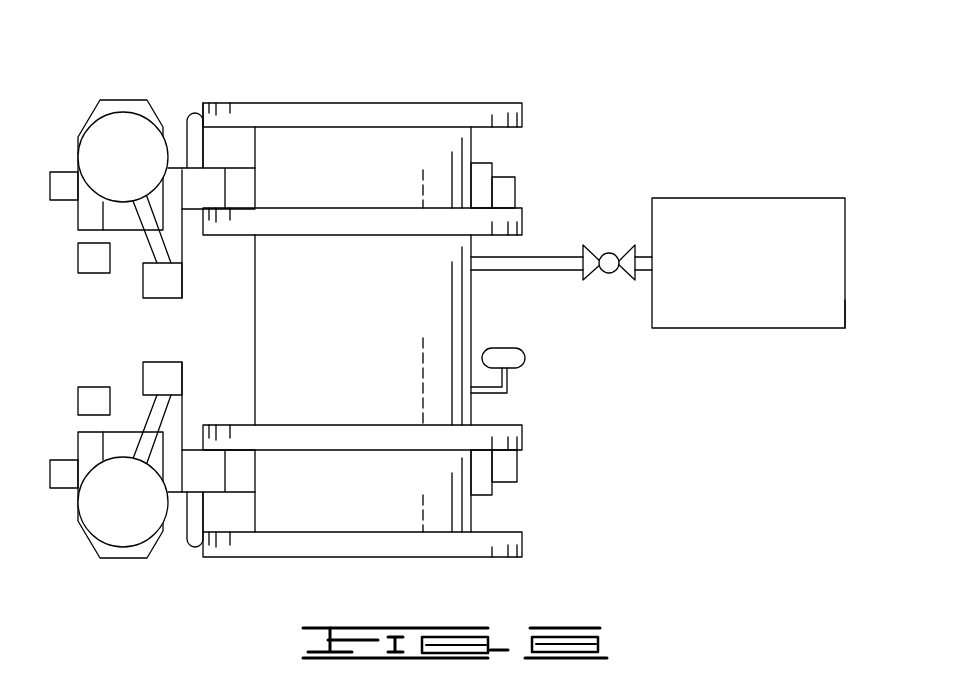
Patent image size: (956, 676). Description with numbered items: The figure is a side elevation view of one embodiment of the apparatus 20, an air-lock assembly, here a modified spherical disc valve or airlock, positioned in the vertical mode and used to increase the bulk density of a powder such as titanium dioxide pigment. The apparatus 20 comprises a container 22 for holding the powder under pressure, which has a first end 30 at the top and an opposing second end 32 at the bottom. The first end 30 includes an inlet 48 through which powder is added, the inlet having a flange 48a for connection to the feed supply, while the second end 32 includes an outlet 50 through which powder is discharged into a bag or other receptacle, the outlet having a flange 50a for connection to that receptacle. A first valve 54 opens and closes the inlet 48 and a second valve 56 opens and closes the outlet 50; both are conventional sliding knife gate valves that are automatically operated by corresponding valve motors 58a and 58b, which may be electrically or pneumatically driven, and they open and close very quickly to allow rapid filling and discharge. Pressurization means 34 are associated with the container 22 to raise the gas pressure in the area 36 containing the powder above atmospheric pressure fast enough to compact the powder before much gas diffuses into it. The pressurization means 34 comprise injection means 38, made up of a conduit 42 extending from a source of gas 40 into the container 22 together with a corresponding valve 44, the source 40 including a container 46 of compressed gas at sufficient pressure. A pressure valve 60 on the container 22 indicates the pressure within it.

The apparatus 20 is at (602, 77).
The container 22 is at (471, 325).
The first end 30 is at (455, 102).
The second end 32 is at (457, 557).
The pressurization means 34 is at (847, 308).
The area 36 is at (376, 341).
The injection means 38 is at (567, 257).
The source of gas 40 is at (768, 198).
The conduit 42 is at (540, 257).
The valve 44 is at (605, 272).
The container 46 is at (767, 276).
The inlet 48 is at (330, 152).
The flange 48a is at (237, 112).
The outlet 50 is at (320, 503).
The flange 50a is at (507, 540).
The first valve 54 is at (287, 237).
The second valve 56 is at (283, 423).
The valve motor 58a is at (105, 143).
The valve motor 58b is at (95, 515).
The pressure valve 60 is at (513, 363).